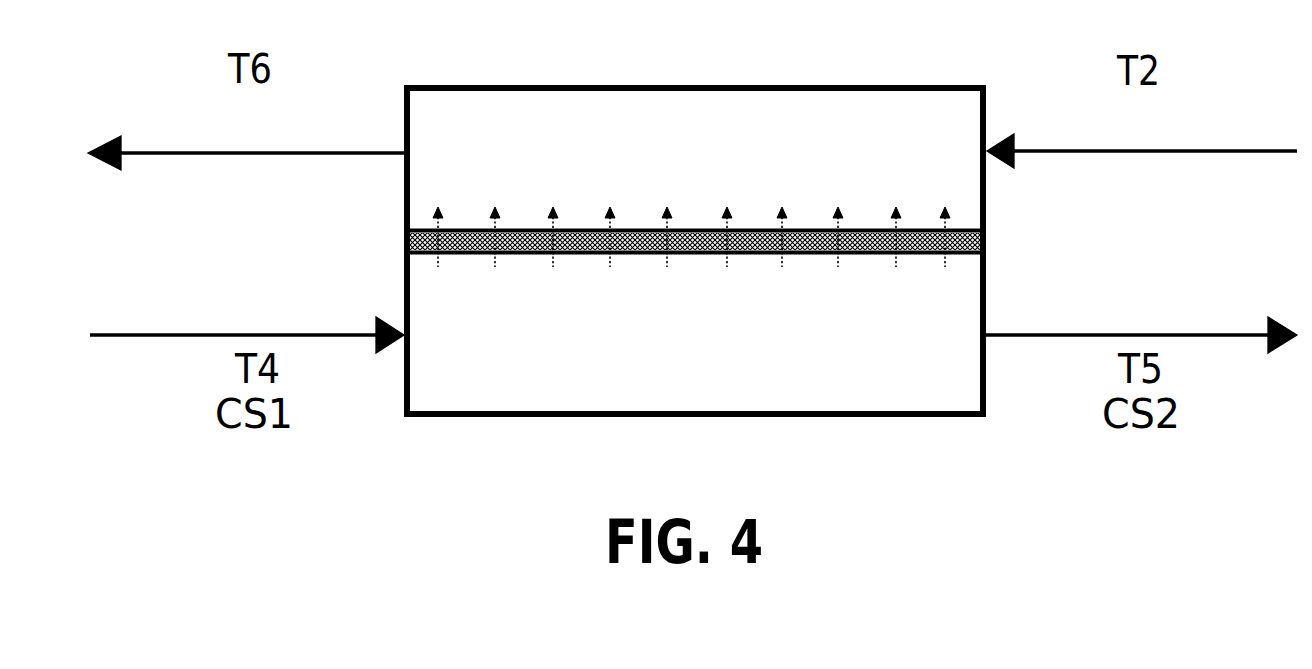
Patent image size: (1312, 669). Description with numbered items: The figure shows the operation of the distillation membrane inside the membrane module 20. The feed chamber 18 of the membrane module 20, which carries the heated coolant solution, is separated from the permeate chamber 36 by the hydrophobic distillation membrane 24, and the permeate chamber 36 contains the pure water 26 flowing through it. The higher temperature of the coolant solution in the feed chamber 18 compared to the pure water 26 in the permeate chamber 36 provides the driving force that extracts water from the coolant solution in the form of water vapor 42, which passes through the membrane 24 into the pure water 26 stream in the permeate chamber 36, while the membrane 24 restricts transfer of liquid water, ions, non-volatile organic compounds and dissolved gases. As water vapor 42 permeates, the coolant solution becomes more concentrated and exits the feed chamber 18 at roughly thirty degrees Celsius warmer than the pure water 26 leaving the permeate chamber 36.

The membrane module 20 is at (695, 223).
The permeate chamber 36 is at (695, 159).
The feed chamber 18 is at (695, 333).
The hydrophobic distillation membrane 24 is at (870, 262).
The water vapor 42 is at (449, 266).
The pure water 26 is at (692, 130).